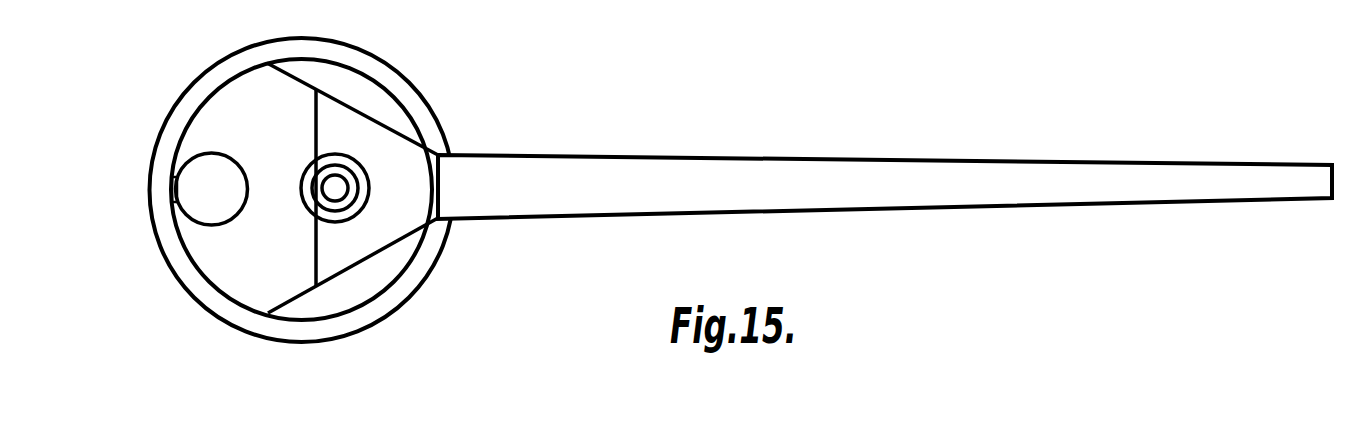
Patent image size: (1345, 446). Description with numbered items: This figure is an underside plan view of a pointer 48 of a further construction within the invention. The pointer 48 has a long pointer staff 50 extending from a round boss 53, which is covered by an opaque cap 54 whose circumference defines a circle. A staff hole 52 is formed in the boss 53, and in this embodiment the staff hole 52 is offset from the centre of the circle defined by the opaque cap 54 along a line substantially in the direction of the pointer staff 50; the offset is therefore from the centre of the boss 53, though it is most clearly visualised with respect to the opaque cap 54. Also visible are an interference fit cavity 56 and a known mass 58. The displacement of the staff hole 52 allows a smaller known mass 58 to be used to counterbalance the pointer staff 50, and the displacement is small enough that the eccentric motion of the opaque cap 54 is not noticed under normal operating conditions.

The pointer 48 is at (718, 175).
The pointer staff 50 is at (1090, 170).
The staff hole 52 is at (340, 188).
The boss 53 is at (208, 265).
The opaque cap 54 is at (388, 72).
The interference fit cavity 56 is at (172, 195).
The known mass 58 is at (192, 172).